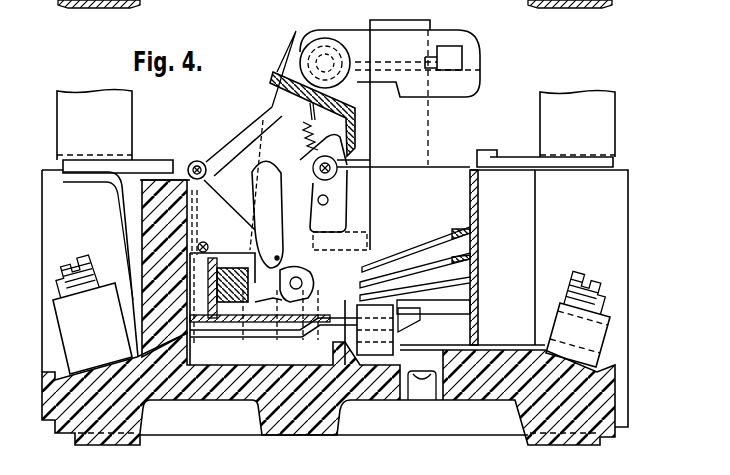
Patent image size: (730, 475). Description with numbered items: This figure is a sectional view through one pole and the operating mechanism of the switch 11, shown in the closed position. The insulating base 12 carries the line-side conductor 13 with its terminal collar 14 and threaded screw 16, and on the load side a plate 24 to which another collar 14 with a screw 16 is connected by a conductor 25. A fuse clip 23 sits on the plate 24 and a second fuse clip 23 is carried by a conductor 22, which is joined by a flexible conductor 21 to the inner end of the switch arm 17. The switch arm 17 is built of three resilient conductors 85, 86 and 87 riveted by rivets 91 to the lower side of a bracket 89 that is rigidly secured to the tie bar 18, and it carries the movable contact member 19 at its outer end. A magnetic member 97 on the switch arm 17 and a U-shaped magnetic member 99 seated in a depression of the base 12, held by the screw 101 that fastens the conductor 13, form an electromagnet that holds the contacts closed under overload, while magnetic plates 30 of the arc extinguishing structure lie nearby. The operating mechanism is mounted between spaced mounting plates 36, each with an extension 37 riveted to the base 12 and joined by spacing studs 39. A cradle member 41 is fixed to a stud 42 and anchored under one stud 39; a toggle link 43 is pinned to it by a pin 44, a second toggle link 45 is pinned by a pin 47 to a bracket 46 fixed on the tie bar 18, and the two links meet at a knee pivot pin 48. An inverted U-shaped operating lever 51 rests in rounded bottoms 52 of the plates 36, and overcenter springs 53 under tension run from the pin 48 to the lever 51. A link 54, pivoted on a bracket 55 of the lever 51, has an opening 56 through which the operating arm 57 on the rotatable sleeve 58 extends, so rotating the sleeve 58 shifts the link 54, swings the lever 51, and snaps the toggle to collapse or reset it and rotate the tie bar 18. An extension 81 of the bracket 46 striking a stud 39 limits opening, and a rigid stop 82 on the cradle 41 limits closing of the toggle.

The switch 11 is at (497, 117).
The insulating base 12 is at (628, 386).
The conductor 13 is at (515, 345).
The terminal clamp or collar 14 is at (62, 313).
The threaded screw 16 is at (60, 276).
The switch arm 17 is at (189, 361).
The tie bar 18 is at (237, 287).
The movable contact member 19 is at (330, 320).
The flexible conductor 21 is at (214, 217).
The conductor 22 is at (478, 169).
The fuse clip 23 is at (62, 111).
The load side fuse terminal or plate 24 is at (163, 159).
The conductor 25 is at (120, 192).
The magnetic plates 30 is at (455, 232).
The mounting plates 36 is at (345, 163).
The extension 37 is at (302, 362).
The spacing studs 39 is at (205, 160).
The cradle member 41 is at (244, 143).
The stud 42 is at (330, 201).
The toggle link 43 is at (262, 168).
The pin 44 is at (277, 113).
The toggle link 45 is at (313, 286).
The bracket 46 is at (274, 298).
The pin 47 is at (300, 287).
The knee pivot pin 48 is at (290, 213).
The operating lever 51 is at (270, 195).
The rounded bottoms 52 is at (310, 257).
The overcenter springs 53 is at (320, 128).
The link 54 is at (362, 36).
The bracket 55 is at (300, 46).
The opening 56 is at (432, 71).
The operating arm 57 is at (463, 62).
The sleeve 58 is at (424, 128).
The extension 81 is at (238, 225).
The rigid stop 82 is at (312, 222).
The resilient conductor 85 is at (240, 330).
The resilient conductor 86 is at (262, 333).
The resilient conductor 87 is at (298, 333).
The bracket 89 is at (187, 317).
The rivets 91 is at (222, 330).
The magnetic member 97 is at (455, 278).
The U-shaped magnetic member 99 is at (373, 340).
The screw 101 is at (437, 368).